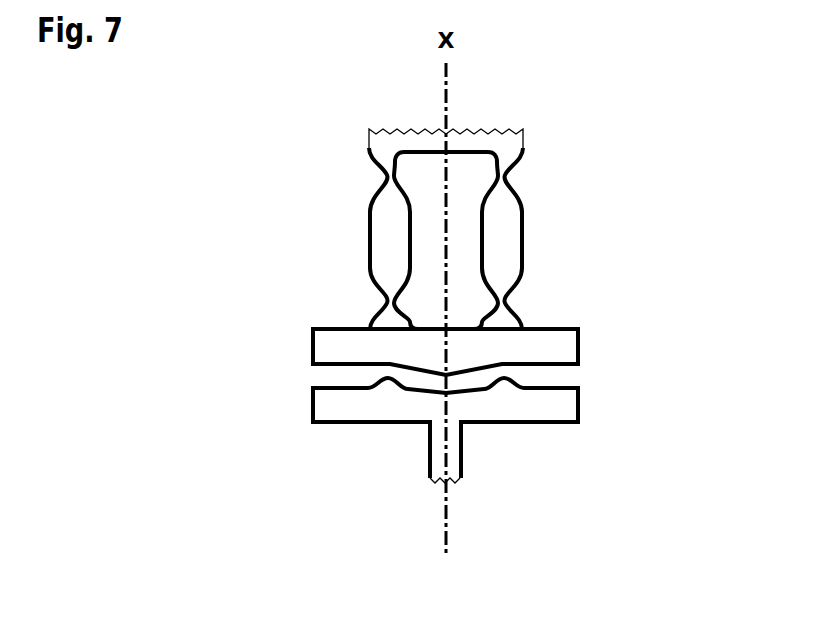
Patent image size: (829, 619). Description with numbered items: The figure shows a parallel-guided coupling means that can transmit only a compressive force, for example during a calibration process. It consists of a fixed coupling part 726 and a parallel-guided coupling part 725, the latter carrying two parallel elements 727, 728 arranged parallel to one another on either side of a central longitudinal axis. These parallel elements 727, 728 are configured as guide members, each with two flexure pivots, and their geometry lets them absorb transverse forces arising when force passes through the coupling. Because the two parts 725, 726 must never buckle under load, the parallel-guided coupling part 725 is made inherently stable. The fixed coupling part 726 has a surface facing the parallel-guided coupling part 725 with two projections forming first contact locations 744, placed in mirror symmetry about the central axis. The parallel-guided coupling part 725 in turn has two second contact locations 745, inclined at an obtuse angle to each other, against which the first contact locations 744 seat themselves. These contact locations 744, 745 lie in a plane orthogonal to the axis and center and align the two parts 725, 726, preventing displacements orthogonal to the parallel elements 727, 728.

The parallel-guided coupling part 725 is at (466, 252).
The fixed coupling part 726 is at (506, 465).
The parallel element 727 is at (380, 233).
The parallel element 728 is at (512, 228).
The first contact locations 744 is at (388, 387).
The second contact locations 745 is at (468, 372).